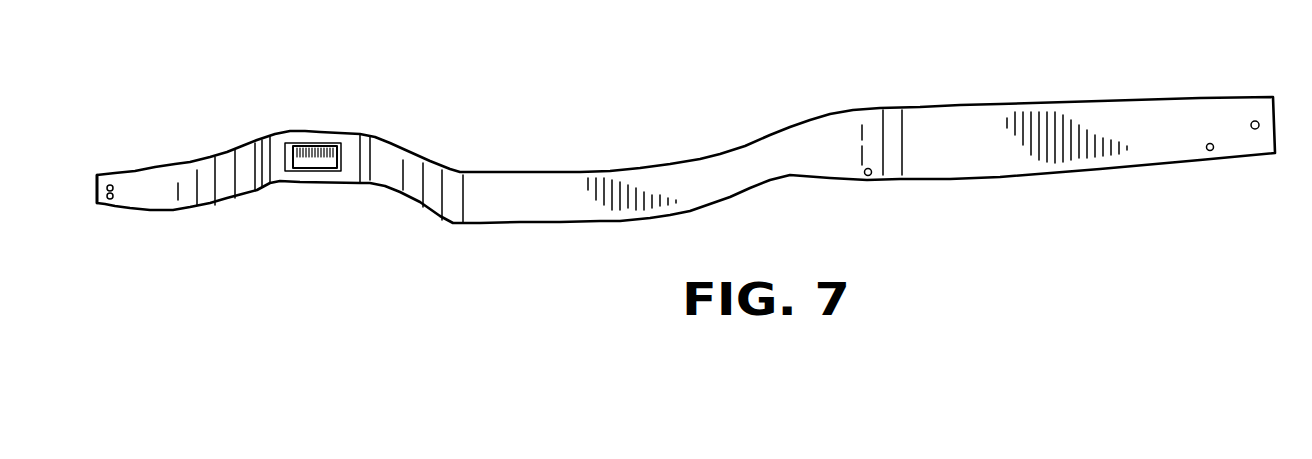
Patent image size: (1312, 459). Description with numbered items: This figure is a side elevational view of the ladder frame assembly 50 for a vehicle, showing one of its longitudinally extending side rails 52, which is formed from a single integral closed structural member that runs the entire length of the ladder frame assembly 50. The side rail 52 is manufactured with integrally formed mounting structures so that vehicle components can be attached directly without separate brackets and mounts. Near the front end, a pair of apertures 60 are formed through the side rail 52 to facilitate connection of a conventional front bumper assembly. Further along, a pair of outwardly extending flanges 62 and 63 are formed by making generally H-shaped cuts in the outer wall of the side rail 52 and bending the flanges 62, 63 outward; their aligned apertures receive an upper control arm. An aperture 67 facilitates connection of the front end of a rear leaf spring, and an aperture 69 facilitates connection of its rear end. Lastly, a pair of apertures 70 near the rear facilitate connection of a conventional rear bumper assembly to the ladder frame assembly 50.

The ladder frame assembly 50 is at (1008, 222).
The side rail 52 is at (560, 185).
The apertures 60 is at (113, 194).
The outwardly extending flange 62 is at (288, 160).
The outwardly extending flange 63 is at (342, 160).
The aperture 67 is at (871, 176).
The aperture 69 is at (1212, 151).
The apertures 70 is at (1257, 120).